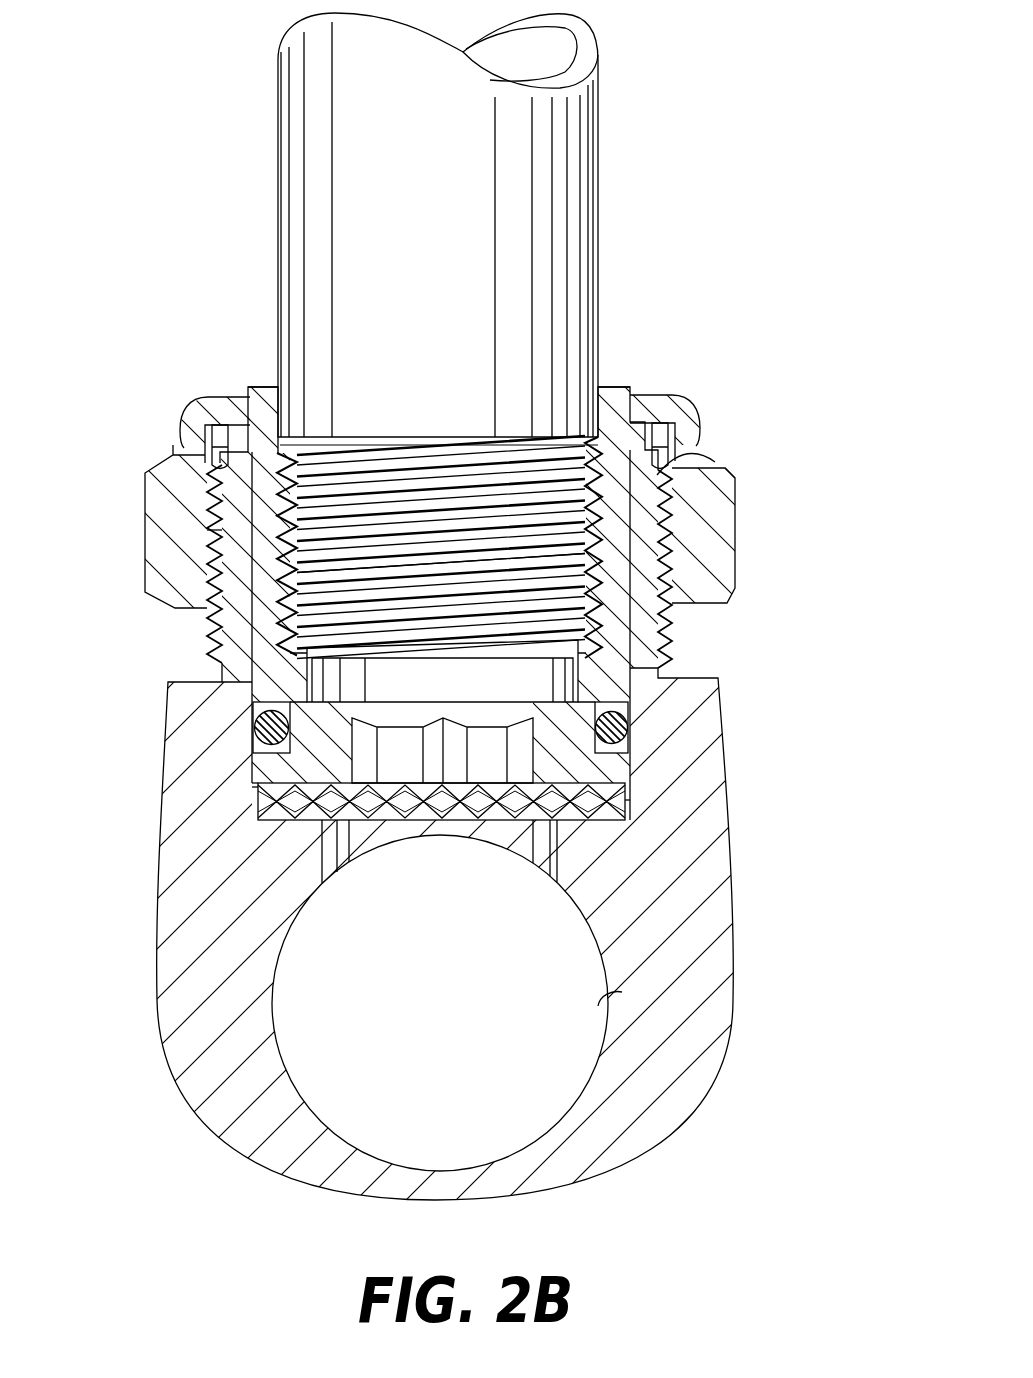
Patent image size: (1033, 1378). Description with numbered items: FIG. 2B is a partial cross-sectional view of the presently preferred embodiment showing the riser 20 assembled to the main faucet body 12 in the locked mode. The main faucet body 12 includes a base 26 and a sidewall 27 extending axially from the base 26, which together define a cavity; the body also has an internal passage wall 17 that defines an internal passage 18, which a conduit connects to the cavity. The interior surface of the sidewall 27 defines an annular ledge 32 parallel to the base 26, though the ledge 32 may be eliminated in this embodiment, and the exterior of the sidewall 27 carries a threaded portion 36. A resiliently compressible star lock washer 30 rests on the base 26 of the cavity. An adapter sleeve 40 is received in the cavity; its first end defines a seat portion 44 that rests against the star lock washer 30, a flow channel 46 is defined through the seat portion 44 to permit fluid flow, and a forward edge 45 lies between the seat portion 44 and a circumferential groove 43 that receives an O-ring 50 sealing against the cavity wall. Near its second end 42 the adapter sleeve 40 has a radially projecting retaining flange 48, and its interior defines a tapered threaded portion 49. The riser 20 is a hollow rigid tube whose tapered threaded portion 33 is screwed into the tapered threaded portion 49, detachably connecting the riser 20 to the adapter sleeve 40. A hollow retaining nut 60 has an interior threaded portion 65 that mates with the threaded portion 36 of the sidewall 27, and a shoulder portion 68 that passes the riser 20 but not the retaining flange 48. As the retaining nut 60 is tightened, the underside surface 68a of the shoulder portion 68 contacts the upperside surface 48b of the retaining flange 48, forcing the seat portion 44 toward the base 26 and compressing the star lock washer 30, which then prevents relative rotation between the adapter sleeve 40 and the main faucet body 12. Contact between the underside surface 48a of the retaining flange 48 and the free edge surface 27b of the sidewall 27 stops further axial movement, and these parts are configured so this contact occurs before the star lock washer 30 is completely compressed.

The main faucet body 12 is at (157, 975).
The internal passage wall 17 is at (606, 1010).
The internal passage 18 is at (324, 1083).
The riser 20 is at (598, 140).
The base 26 is at (630, 802).
The sidewall 27 is at (650, 633).
The free edge surface 27b is at (688, 452).
The star lock washer 30 is at (250, 787).
The annular ledge 32 is at (630, 753).
The tapered threaded portion 33 is at (383, 465).
The threaded portion 36 is at (203, 650).
The adapter sleeve 40 is at (623, 668).
The second end 42 is at (262, 386).
The groove 43 is at (255, 700).
The seat portion 44 is at (533, 800).
The forward edge 45 is at (255, 783).
The flow channel 46 is at (393, 767).
The retaining flange 48 is at (185, 447).
The underside surface 48a is at (717, 462).
The upperside surface 48b is at (637, 397).
The tapered threaded portion 49 is at (307, 577).
The O-ring 50 is at (633, 717).
The retaining nut 60 is at (157, 490).
The threaded portion 65 is at (227, 532).
The shoulder portion 68 is at (205, 400).
The underside surface 68a is at (697, 425).